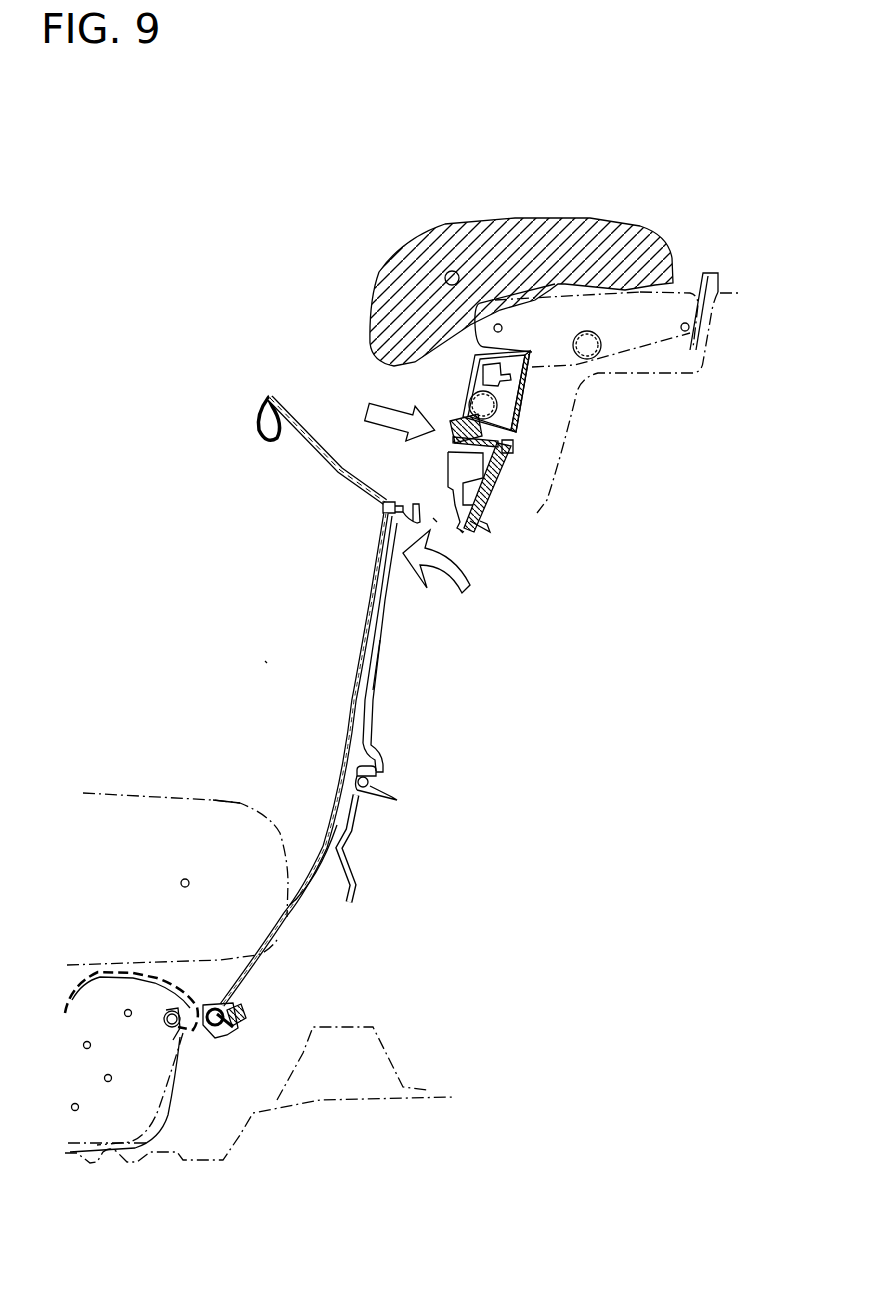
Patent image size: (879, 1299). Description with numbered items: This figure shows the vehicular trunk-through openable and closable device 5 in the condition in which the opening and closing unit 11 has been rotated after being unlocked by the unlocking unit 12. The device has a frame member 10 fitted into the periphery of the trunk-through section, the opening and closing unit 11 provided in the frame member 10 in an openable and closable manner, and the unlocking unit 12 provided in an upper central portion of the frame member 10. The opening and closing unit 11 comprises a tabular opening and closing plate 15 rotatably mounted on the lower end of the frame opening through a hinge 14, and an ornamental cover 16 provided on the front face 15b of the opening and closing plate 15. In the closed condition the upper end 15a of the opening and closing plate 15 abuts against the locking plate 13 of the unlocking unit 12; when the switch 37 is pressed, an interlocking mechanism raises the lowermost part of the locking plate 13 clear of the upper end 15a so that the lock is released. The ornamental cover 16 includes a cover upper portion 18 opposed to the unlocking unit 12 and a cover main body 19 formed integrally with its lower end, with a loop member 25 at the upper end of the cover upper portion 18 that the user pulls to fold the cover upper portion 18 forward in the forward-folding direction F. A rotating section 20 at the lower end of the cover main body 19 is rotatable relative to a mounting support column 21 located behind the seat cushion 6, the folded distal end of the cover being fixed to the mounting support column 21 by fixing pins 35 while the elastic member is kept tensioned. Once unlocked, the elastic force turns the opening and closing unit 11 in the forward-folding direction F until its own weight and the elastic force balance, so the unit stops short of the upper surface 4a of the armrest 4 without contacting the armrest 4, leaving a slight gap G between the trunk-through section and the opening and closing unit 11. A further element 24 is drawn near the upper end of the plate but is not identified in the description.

The armrest 4 is at (122, 825).
The upper surface 4a is at (213, 800).
The vehicular trunk-through openable and closable device 5 is at (265, 661).
The seat cushion 6 is at (88, 1060).
The frame member 10 is at (345, 832).
The opening and closing unit 11 is at (340, 721).
The unlocking unit 12 is at (520, 407).
The locking plate 13 is at (433, 518).
The hinge 14 is at (374, 780).
The opening and closing plate 15 is at (391, 607).
The upper end of the opening and closing plate 15a is at (417, 503).
The front face of the opening and closing plate 15b is at (372, 683).
The ornamental cover 16 is at (281, 701).
The cover upper portion 18 is at (331, 470).
The cover main body 19 is at (365, 625).
The rotating section 20 is at (268, 1042).
The mounting support column 21 is at (220, 1033).
The cable end fitting 24 is at (384, 505).
The loop member 25 is at (257, 411).
The fixing pins 35 is at (240, 1030).
The switch 37 is at (452, 430).
The forward-folding direction F is at (447, 583).
The slight gap G is at (460, 530).